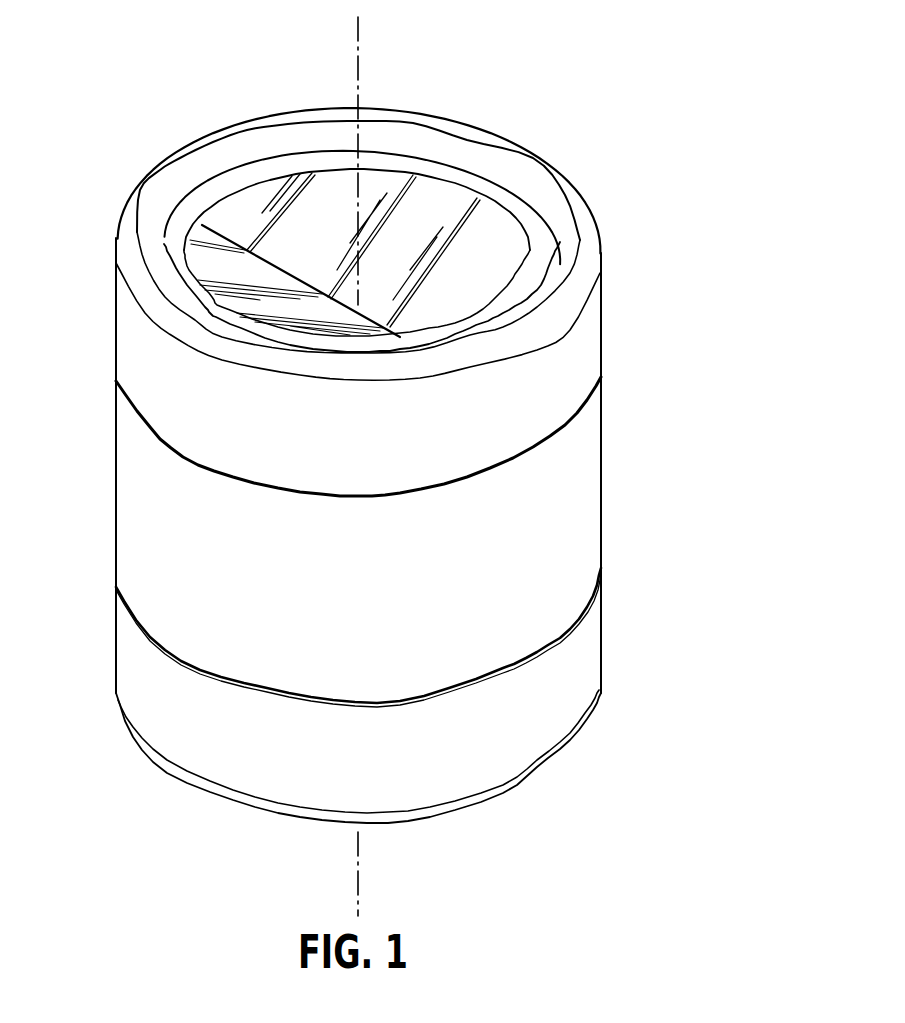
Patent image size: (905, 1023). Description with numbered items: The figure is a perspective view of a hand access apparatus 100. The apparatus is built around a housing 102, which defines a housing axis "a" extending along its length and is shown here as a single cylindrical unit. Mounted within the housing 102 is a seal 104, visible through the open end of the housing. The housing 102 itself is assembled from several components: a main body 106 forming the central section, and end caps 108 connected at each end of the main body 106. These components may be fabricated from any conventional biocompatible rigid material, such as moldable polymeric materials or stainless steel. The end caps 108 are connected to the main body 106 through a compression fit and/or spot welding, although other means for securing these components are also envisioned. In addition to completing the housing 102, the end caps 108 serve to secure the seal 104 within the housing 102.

The hand access apparatus 100 is at (565, 88).
The housing 102 is at (106, 366).
The seal 104 is at (322, 212).
The main body 106 is at (601, 475).
The end caps 108 is at (151, 211).